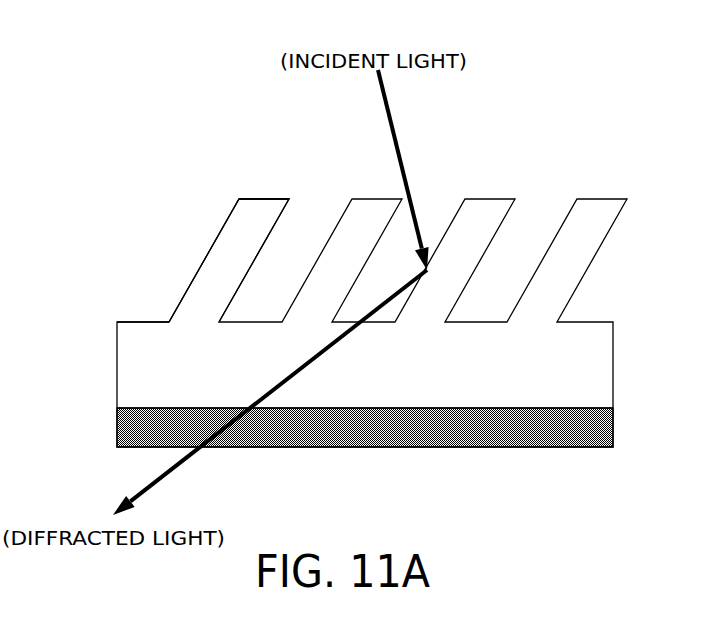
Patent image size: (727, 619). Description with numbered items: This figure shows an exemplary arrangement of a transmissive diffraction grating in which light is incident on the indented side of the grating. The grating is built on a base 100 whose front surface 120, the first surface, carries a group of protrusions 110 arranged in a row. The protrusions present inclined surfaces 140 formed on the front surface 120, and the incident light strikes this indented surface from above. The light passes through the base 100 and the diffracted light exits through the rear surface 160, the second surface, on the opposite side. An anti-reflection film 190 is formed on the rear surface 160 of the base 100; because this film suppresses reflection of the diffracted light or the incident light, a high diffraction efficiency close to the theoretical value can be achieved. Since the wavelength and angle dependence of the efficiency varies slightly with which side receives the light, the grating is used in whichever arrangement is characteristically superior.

The base 100 is at (118, 342).
The protrusions 110 is at (256, 205).
The front surface 120 is at (138, 319).
The inclined surfaces 140 is at (220, 248).
The rear surface 160 is at (190, 407).
The anti-reflection film 190 is at (118, 425).